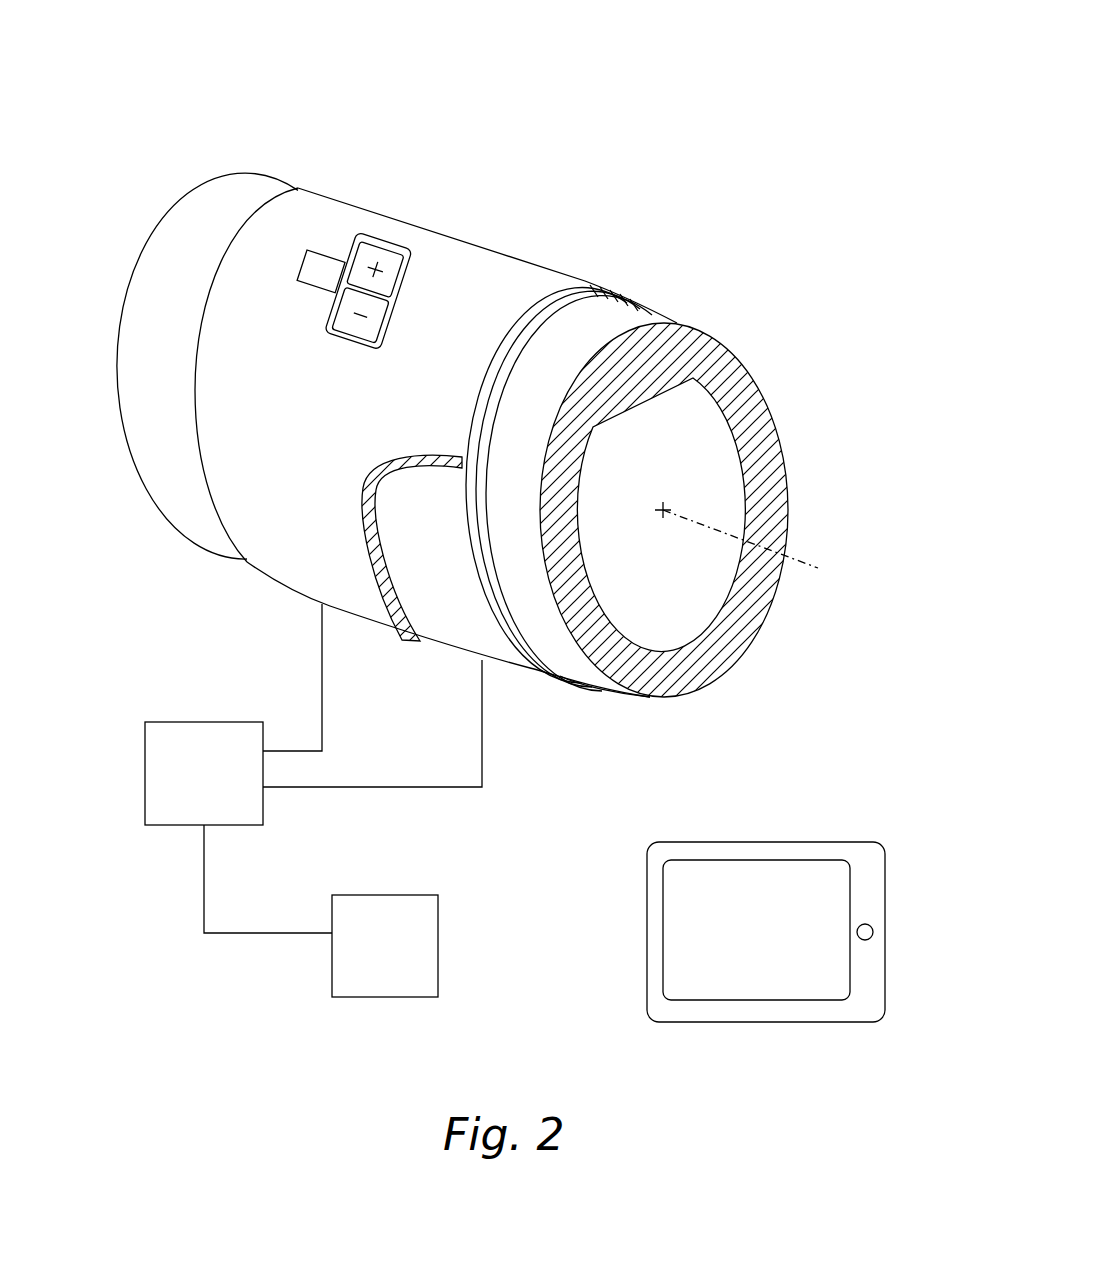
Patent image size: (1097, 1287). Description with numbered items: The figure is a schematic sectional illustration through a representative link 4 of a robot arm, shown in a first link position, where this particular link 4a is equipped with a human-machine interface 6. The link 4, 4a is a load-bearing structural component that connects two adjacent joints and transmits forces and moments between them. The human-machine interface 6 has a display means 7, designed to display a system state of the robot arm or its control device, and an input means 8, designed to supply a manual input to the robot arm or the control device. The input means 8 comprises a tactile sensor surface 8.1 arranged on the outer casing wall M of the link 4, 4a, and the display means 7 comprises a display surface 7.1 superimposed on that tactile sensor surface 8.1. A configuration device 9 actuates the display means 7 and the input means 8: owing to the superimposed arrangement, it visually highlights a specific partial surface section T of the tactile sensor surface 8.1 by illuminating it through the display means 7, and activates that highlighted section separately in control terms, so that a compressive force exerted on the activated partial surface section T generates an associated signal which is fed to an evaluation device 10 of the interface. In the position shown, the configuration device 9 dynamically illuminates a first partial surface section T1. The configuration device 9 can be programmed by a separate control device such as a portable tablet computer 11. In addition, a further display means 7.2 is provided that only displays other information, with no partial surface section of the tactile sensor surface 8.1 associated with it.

The human-machine interface 6 is at (498, 406).
The display means 7 is at (477, 272).
The display surface 7.1 is at (620, 292).
The further display means 7.2 is at (321, 252).
The partial surface section T is at (462, 199).
The first partial surface section T1 is at (413, 245).
The outer casing wall M is at (608, 310).
The link 4 is at (709, 510).
The link 4a is at (760, 392).
The input means 8 is at (458, 624).
The tactile sensor surface 8.1 is at (570, 687).
The configuration device 9 is at (202, 742).
The evaluation device 10 is at (408, 945).
The portable tablet computer 11 is at (763, 842).